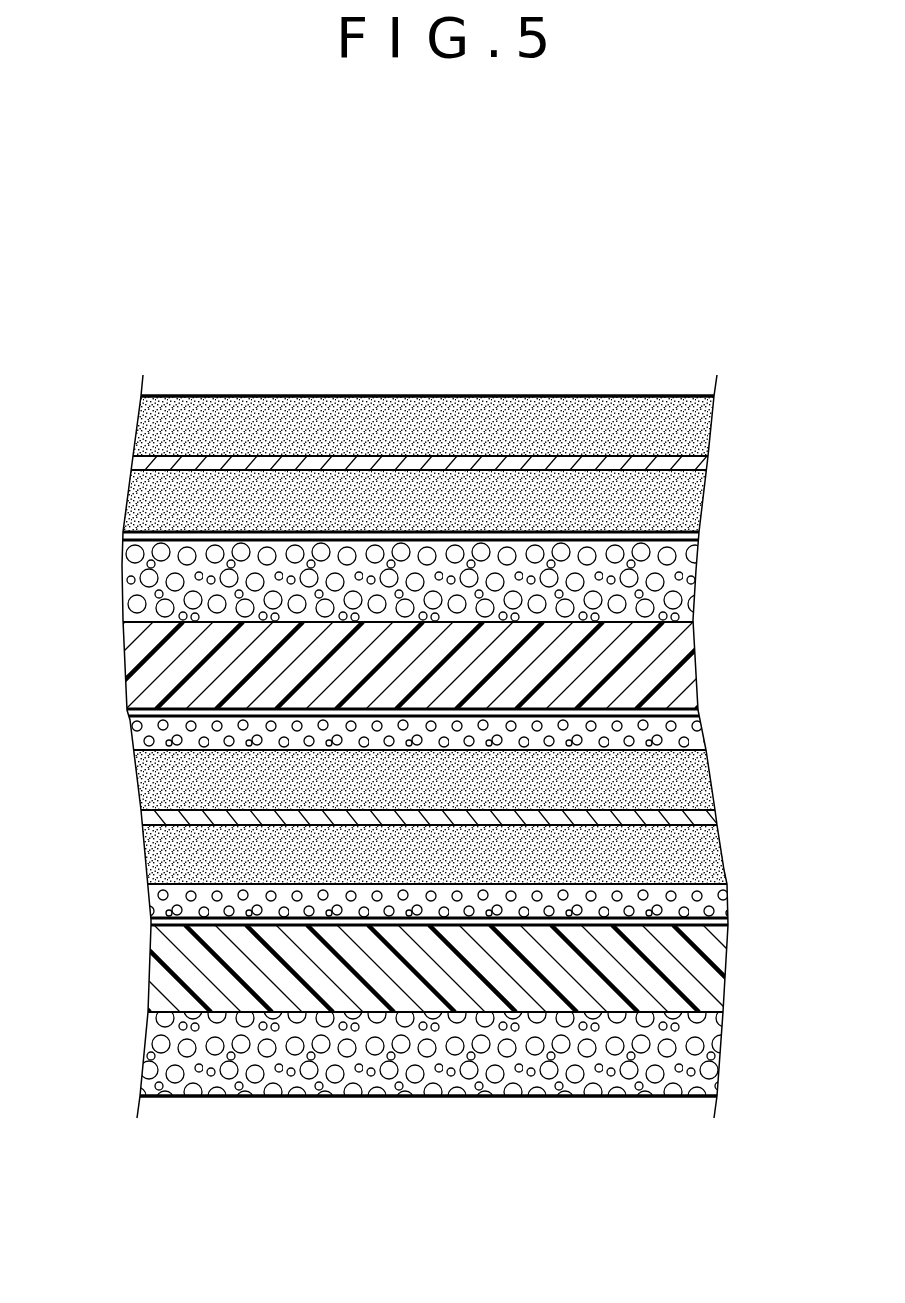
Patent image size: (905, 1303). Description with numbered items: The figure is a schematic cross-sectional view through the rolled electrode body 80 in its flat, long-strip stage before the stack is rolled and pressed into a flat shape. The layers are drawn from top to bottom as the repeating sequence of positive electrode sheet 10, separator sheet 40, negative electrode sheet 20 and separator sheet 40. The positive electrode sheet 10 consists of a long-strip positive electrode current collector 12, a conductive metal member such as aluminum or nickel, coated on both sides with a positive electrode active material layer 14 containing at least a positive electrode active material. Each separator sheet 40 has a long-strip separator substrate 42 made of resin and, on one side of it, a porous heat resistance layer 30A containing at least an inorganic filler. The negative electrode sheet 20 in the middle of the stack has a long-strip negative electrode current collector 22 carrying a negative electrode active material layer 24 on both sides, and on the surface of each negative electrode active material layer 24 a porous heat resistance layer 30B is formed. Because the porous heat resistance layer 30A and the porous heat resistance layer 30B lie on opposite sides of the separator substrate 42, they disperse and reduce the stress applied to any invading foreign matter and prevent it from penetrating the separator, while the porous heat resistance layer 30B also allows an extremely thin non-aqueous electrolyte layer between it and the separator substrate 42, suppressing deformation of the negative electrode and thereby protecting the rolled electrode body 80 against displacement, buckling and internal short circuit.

The rolled electrode body 80 is at (655, 318).
The positive electrode sheet 10 is at (103, 397).
The positive electrode active material layer 14 is at (698, 423).
The positive electrode current collector 12 is at (697, 463).
The separator sheet 40 is at (103, 543).
The porous heat resistance layer 30A is at (682, 583).
The separator substrate 42 is at (683, 667).
The negative electrode sheet 20 is at (103, 718).
The porous heat resistance layer 30B is at (697, 733).
The negative electrode active material layer 24 is at (706, 780).
The negative electrode current collector 22 is at (713, 818).